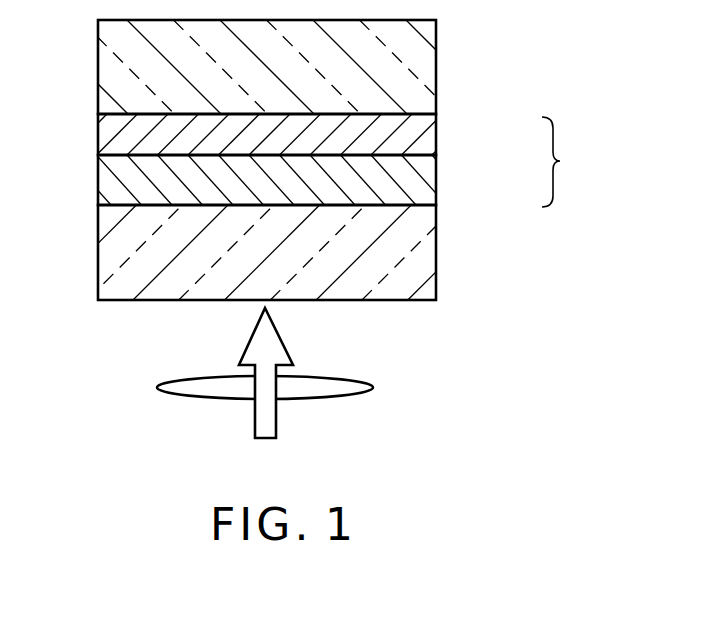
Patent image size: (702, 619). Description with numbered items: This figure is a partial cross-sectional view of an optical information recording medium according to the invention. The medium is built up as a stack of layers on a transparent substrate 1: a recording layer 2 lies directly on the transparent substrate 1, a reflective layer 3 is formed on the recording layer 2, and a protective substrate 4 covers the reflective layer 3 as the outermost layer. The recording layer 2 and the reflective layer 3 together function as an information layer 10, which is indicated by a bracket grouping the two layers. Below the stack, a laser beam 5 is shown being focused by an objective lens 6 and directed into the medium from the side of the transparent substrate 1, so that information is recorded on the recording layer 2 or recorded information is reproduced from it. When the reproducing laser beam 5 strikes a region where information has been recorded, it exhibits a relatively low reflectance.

The transparent substrate 1 is at (435, 253).
The recording layer 2 is at (435, 185).
The reflective layer 3 is at (435, 138).
The protective substrate 4 is at (435, 75).
The laser beam 5 is at (276, 424).
The objective lens 6 is at (373, 387).
The information layer 10 is at (571, 162).